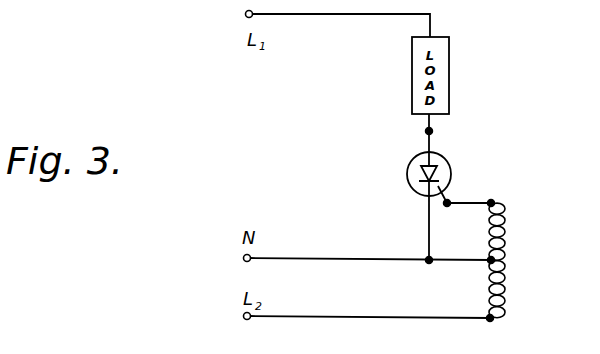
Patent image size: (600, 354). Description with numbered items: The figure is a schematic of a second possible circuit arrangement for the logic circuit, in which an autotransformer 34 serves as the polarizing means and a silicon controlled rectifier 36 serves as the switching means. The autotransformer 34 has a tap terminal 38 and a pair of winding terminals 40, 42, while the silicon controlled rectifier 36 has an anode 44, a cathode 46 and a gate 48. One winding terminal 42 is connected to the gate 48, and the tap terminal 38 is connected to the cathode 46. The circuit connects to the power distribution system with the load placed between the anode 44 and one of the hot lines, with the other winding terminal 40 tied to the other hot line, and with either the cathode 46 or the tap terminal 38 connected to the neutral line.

The autotransformer 34 is at (505, 246).
The silicon controlled rectifier 36 is at (407, 168).
The tap terminal 38 is at (488, 263).
The winding terminal 40 is at (490, 321).
The winding terminal 42 is at (494, 201).
The anode 44 is at (432, 131).
The cathode 46 is at (425, 263).
The gate 48 is at (450, 200).